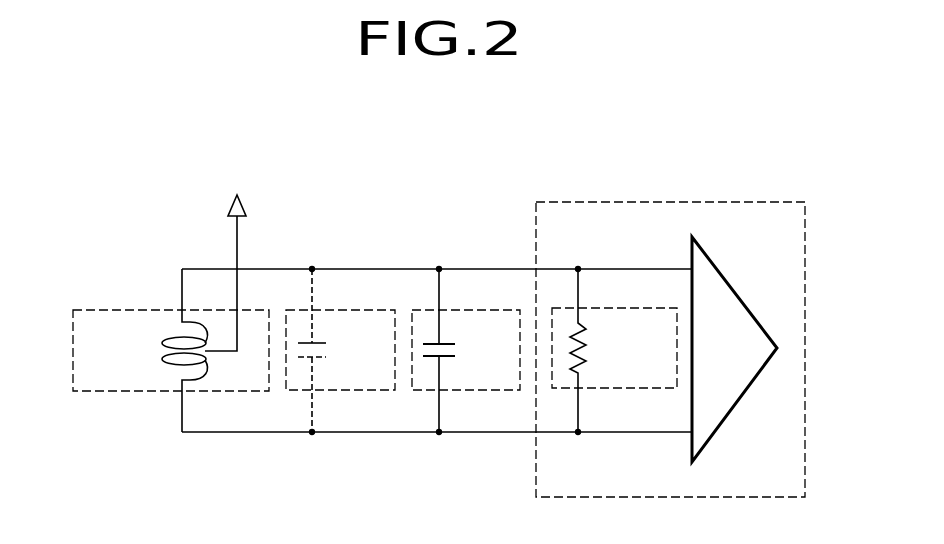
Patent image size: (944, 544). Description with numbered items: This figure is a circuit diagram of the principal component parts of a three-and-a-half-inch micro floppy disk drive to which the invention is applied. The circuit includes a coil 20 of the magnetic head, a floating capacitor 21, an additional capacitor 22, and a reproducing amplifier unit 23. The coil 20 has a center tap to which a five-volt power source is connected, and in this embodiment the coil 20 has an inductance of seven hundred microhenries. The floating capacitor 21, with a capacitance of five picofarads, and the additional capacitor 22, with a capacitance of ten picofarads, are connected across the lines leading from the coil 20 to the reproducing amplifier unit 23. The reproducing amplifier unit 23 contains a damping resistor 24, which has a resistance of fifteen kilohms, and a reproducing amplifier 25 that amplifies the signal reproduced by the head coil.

The coil 20 is at (105, 310).
The floating capacitor 21 is at (352, 310).
The additional capacitor 22 is at (482, 310).
The reproducing amplifier unit 23 is at (665, 202).
The damping resistor 24 is at (612, 308).
The reproducing amplifier 25 is at (731, 286).